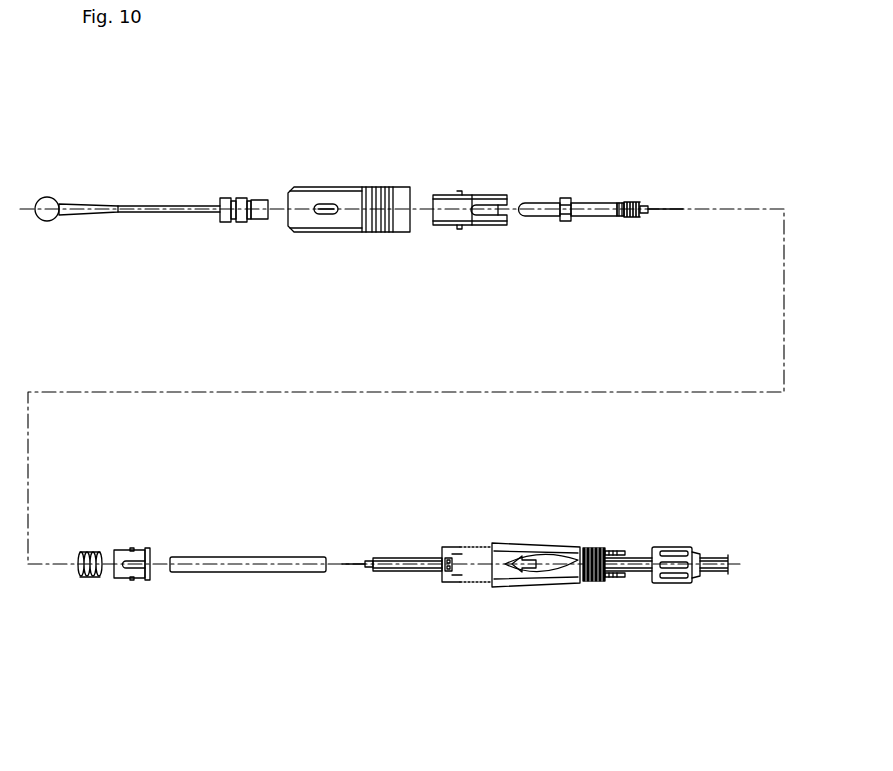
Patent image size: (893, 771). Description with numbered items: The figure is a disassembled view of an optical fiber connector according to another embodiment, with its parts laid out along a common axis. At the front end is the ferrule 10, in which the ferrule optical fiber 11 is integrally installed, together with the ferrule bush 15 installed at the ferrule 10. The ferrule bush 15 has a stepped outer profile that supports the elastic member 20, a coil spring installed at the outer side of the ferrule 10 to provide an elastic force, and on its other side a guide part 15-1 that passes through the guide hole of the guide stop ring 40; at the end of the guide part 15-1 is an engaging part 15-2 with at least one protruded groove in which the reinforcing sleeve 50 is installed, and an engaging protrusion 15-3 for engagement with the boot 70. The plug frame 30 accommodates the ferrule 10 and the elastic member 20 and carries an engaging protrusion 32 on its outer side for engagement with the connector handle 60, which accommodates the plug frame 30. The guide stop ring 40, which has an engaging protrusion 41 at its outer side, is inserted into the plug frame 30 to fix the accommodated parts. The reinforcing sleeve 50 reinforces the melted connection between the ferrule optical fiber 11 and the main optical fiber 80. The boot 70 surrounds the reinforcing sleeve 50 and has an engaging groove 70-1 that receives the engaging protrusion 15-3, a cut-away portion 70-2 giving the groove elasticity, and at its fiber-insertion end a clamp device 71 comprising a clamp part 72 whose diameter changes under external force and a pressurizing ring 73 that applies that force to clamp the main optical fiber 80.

The ferrule 10 is at (541, 203).
The ferrule optical fiber 11 is at (646, 207).
The ferrule bush 15 is at (568, 198).
The guide part 15-1 is at (596, 203).
The engaging part 15-2 is at (629, 218).
The engaging protrusion 15-3 is at (618, 218).
The elastic member 20 is at (86, 578).
The plug frame 30 is at (468, 208).
The engaging protrusion 32 is at (459, 228).
The guide stop ring 40 is at (130, 574).
The engaging protrusion 41 is at (132, 549).
The reinforcing sleeve 50 is at (245, 572).
The connector handle 60 is at (335, 192).
The boot 70 is at (490, 585).
The engaging groove 70-1 is at (457, 562).
The cut-away portion 70-2 is at (455, 556).
The clamp device 71 is at (655, 644).
The clamp part 72 is at (612, 582).
The pressurizing ring 73 is at (673, 584).
The main optical fiber 80 is at (368, 569).